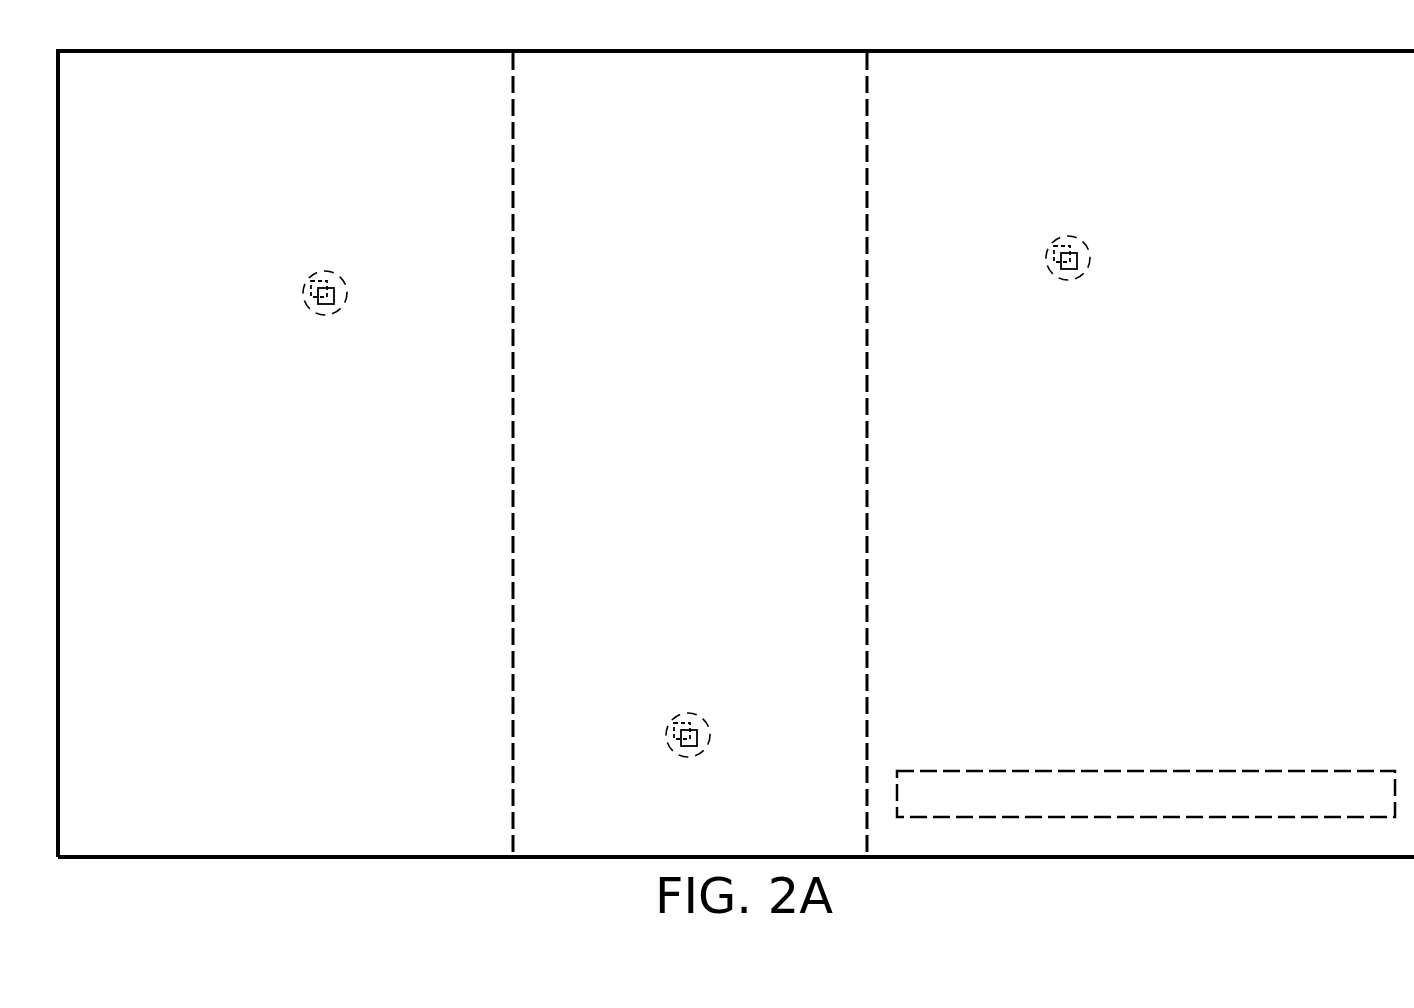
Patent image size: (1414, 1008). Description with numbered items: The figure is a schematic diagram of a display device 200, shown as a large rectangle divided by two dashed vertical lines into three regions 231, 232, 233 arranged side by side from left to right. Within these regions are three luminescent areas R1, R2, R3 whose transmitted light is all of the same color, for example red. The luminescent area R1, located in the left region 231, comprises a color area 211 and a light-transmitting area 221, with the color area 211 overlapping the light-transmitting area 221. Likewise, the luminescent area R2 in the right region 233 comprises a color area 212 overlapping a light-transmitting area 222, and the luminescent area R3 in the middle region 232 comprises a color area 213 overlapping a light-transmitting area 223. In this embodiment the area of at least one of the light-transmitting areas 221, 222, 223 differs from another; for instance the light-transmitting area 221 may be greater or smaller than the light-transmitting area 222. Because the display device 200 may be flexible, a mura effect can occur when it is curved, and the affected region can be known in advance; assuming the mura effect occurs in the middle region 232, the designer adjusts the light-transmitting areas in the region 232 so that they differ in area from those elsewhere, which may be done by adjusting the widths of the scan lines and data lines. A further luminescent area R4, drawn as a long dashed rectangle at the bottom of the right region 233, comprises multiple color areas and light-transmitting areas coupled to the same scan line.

The display device 200 is at (58, 52).
The region 231 is at (313, 470).
The region 232 is at (716, 470).
The region 233 is at (1173, 470).
The light-transmitting area 221 is at (288, 284).
The light-transmitting area 222 is at (1031, 249).
The light-transmitting area 223 is at (651, 726).
The color area 211 is at (370, 311).
The color area 212 is at (1113, 276).
The color area 213 is at (733, 753).
The luminescent area R1 is at (353, 260).
The luminescent area R2 is at (1096, 225).
The luminescent area R3 is at (716, 702).
The luminescent area R4 is at (1145, 770).